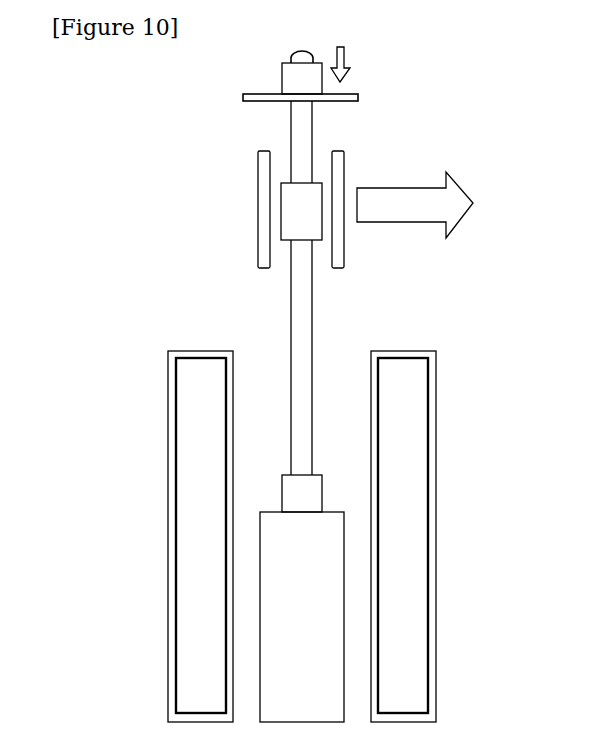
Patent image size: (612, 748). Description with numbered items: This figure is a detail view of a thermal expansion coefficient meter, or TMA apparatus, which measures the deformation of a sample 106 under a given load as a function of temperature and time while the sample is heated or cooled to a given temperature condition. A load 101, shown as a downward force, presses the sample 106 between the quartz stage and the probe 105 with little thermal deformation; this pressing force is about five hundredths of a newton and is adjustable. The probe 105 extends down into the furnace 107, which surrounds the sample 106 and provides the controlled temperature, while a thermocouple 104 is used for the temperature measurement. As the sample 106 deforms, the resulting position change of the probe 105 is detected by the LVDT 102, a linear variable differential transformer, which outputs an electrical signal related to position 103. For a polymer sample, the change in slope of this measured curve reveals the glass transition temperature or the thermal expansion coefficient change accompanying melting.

The load 101 is at (362, 64).
The LVDT (linear variable differential transformer) 102 is at (236, 202).
The signal related to position 103 is at (437, 205).
The thermocouple 104 is at (269, 512).
The probe 105 is at (312, 425).
The sample 106 is at (323, 488).
The furnace 107 is at (436, 552).